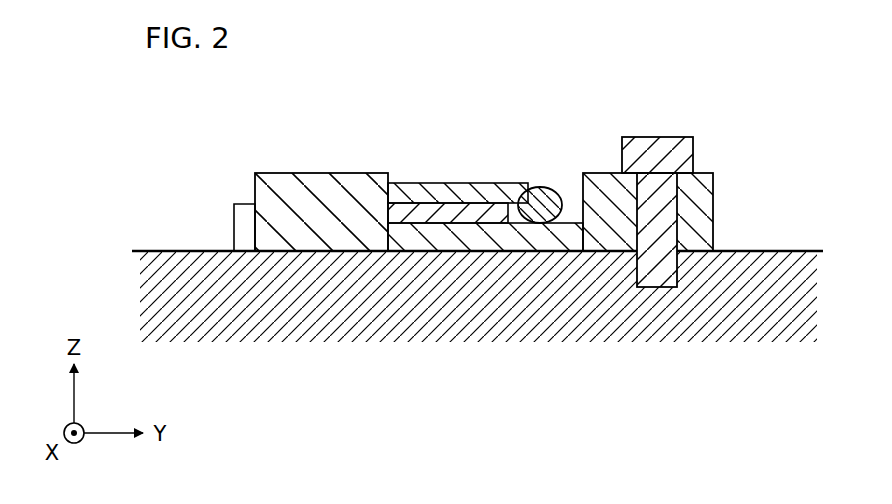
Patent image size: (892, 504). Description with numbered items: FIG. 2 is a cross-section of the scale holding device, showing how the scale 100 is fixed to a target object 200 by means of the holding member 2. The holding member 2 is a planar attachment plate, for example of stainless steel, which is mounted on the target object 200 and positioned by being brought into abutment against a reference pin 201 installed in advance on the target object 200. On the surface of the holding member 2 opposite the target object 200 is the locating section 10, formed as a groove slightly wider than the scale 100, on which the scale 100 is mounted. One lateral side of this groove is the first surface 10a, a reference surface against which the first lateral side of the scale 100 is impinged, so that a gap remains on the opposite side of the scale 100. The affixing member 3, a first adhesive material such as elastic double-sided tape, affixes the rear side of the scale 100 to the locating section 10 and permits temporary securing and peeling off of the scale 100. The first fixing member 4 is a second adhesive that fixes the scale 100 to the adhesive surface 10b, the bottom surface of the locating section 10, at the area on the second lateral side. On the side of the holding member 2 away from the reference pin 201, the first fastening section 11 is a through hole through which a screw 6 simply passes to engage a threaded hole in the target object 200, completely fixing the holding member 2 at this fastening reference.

The target object 200 is at (180, 250).
The reference pin 201 is at (245, 210).
The holding member 2 is at (337, 180).
The affixing member 3 is at (424, 214).
The first fixing member 4 is at (543, 188).
The screw 6 is at (658, 147).
The locating section 10 is at (483, 247).
The first surface 10a is at (397, 180).
The adhesive surface 10b is at (583, 230).
The first fastening section 11 is at (703, 197).
The scale 100 is at (483, 247).